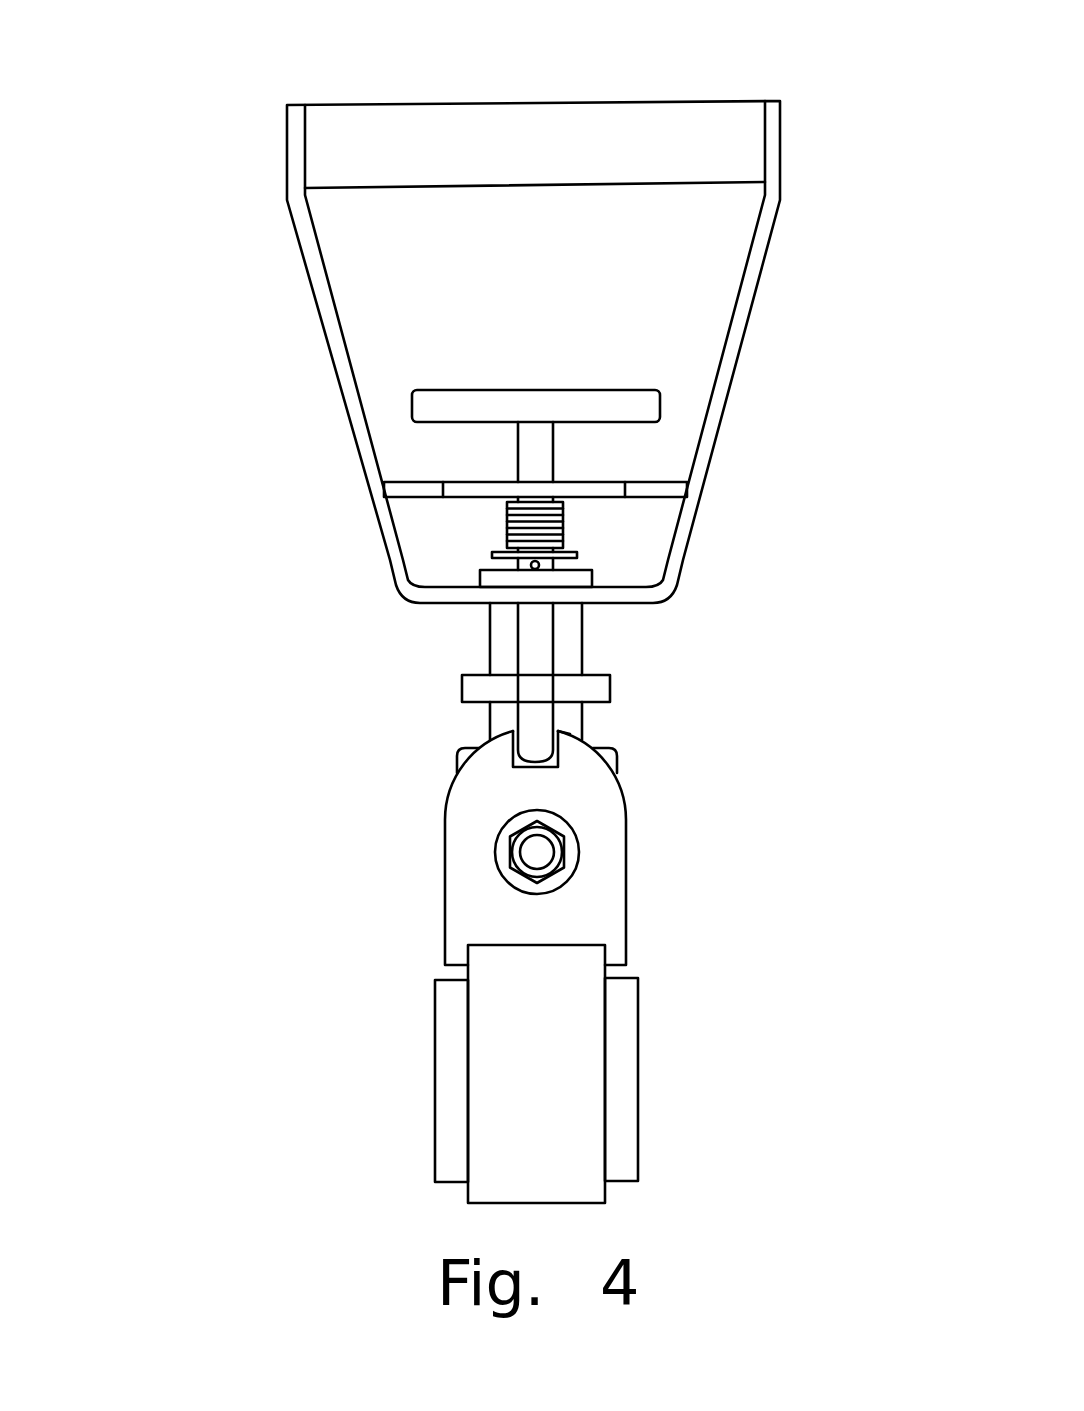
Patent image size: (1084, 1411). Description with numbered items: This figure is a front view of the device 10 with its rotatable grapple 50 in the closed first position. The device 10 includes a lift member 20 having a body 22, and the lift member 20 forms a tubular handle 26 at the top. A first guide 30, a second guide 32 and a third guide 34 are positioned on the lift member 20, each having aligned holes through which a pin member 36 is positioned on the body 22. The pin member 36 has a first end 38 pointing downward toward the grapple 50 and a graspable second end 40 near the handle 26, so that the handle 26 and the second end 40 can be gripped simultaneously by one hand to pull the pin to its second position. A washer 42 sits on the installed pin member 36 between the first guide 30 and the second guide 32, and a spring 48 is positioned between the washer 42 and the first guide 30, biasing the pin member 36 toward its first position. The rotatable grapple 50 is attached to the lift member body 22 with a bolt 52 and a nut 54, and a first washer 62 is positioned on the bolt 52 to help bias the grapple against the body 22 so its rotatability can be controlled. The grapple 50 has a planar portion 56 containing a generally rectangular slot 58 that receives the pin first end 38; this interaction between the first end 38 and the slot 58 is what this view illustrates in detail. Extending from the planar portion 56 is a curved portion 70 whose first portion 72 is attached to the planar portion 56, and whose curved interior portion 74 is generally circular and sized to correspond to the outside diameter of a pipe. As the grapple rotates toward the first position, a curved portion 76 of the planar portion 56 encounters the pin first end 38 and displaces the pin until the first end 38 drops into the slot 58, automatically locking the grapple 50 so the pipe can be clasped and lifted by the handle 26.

The device 10 is at (237, 204).
The lift member 20 is at (776, 285).
The body 22 is at (490, 663).
The tubular handle 26 is at (542, 132).
The first guide 30 is at (610, 477).
The second guide 32 is at (580, 565).
The third guide 34 is at (600, 670).
The pin member 36 is at (553, 638).
The first end 38 is at (517, 728).
The graspable second end 40 is at (537, 390).
The washer 42 is at (493, 553).
The spring 48 is at (503, 532).
The rotatable grapple 50 is at (489, 864).
The bolt 52 is at (550, 843).
The nut 54 is at (562, 868).
The planar portion 56 is at (627, 940).
The slot 58 is at (510, 755).
The first washer 62 is at (503, 878).
The curved portion 70 is at (536, 1111).
The first portion 72 is at (488, 1197).
The curved interior portion 74 is at (433, 1062).
The curved portion 76 is at (605, 762).